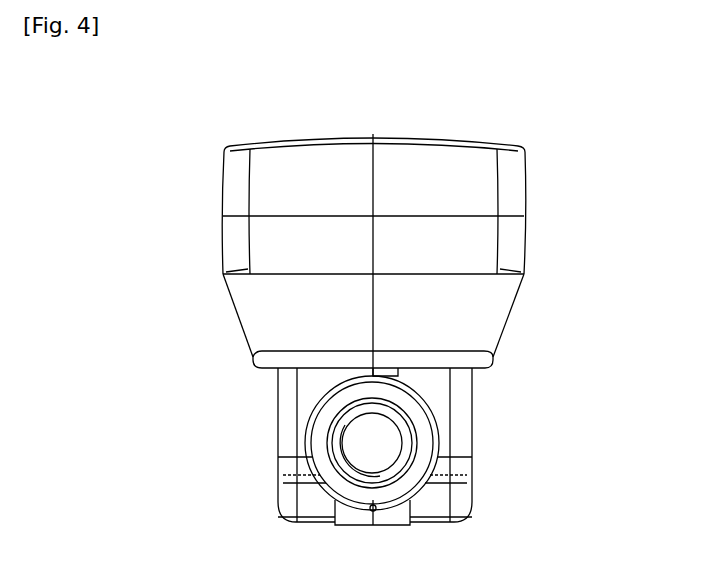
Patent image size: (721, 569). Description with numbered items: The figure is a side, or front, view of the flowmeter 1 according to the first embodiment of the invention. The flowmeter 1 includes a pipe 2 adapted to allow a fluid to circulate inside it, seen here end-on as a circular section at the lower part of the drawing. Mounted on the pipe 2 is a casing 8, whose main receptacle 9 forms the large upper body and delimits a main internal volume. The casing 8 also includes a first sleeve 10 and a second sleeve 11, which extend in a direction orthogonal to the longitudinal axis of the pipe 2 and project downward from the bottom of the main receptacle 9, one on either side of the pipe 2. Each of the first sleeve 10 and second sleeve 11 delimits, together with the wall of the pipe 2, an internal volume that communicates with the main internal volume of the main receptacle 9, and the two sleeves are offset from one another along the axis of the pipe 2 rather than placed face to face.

The flowmeter 1 is at (172, 221).
The pipe 2 is at (373, 443).
The casing 8 is at (556, 170).
The main receptacle 9 is at (517, 247).
The first sleeve 10 is at (283, 402).
The second sleeve 11 is at (465, 402).